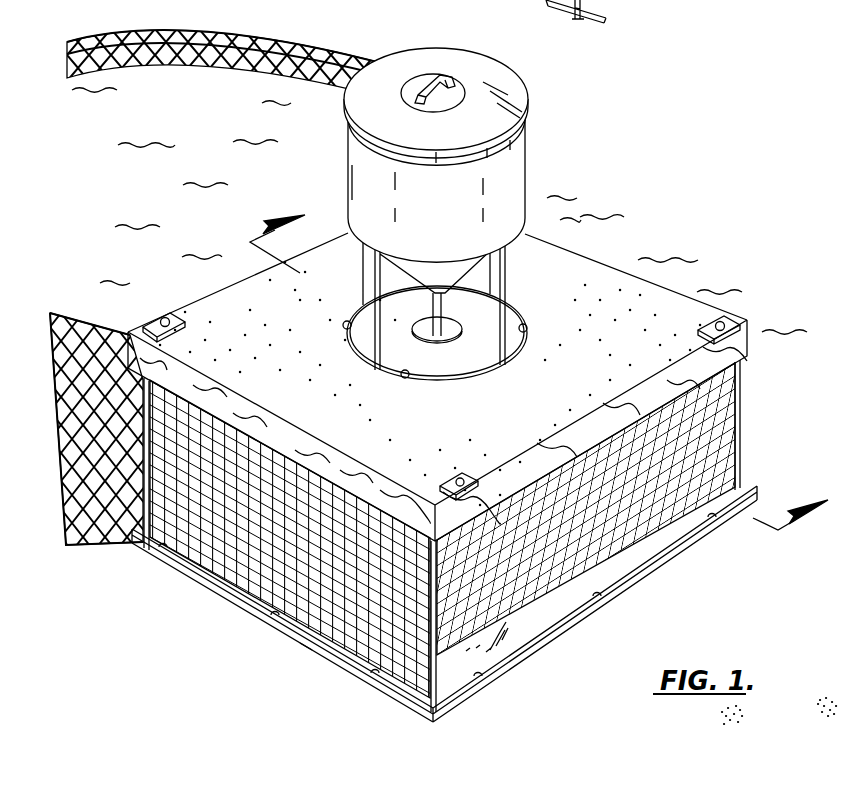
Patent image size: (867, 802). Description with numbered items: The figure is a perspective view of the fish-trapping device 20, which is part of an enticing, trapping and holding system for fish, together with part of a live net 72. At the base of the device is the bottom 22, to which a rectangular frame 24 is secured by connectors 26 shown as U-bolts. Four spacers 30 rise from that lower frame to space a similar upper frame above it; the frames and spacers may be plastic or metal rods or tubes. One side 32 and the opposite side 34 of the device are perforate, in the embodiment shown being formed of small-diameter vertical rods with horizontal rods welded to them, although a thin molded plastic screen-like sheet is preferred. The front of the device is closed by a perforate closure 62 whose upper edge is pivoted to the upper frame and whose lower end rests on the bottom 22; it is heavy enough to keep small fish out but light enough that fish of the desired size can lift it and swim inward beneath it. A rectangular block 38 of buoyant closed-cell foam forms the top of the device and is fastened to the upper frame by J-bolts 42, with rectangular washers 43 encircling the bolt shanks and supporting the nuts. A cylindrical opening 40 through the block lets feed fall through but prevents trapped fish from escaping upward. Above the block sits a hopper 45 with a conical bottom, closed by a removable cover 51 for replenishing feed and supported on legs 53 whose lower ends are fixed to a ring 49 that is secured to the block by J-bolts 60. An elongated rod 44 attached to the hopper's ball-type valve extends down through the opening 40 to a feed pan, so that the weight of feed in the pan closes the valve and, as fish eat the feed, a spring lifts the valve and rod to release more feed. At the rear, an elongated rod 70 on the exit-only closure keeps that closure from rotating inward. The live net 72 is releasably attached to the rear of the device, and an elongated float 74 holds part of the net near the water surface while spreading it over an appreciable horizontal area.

The fish-trapping device 20 is at (467, 367).
The bottom 22 is at (330, 656).
The rectangular frame 24 is at (655, 563).
The connectors 26 is at (713, 522).
The spacers 30 is at (741, 436).
The side 32 is at (291, 643).
The opposite side 34 is at (725, 417).
The rectangular block of buoyant material 38 is at (668, 298).
The cylindrical opening 40 is at (448, 338).
The J-bolts 42 is at (166, 318).
The rectangular washers 43 is at (151, 320).
The elongated rod 44 is at (437, 343).
The hopper 45 is at (527, 158).
The ring 49 is at (518, 354).
The removable cover 51 is at (508, 78).
The legs 53 is at (360, 278).
The J-bolts 60 is at (528, 330).
The closure 62 is at (560, 576).
The elongated rod 70 is at (528, 0).
The live net 72 is at (198, 64).
The elongated float 74 is at (133, 42).